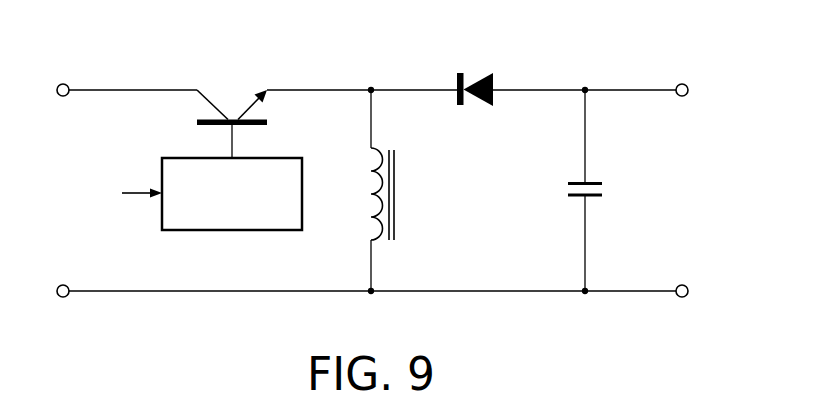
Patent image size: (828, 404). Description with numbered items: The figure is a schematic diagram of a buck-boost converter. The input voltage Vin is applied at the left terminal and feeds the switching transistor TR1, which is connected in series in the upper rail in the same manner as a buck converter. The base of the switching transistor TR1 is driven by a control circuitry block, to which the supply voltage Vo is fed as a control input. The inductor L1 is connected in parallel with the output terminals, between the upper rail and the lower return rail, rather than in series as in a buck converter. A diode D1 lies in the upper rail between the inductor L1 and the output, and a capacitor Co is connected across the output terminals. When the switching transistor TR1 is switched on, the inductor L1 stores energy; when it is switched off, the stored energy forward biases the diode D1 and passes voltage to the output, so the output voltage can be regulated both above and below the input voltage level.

The input voltage Vin is at (62, 76).
The switching transistor TR1 is at (232, 104).
The supply voltage Vo is at (198, 194).
The inductor L1 is at (396, 190).
The diode D1 is at (475, 77).
The capacitor Co is at (602, 190).